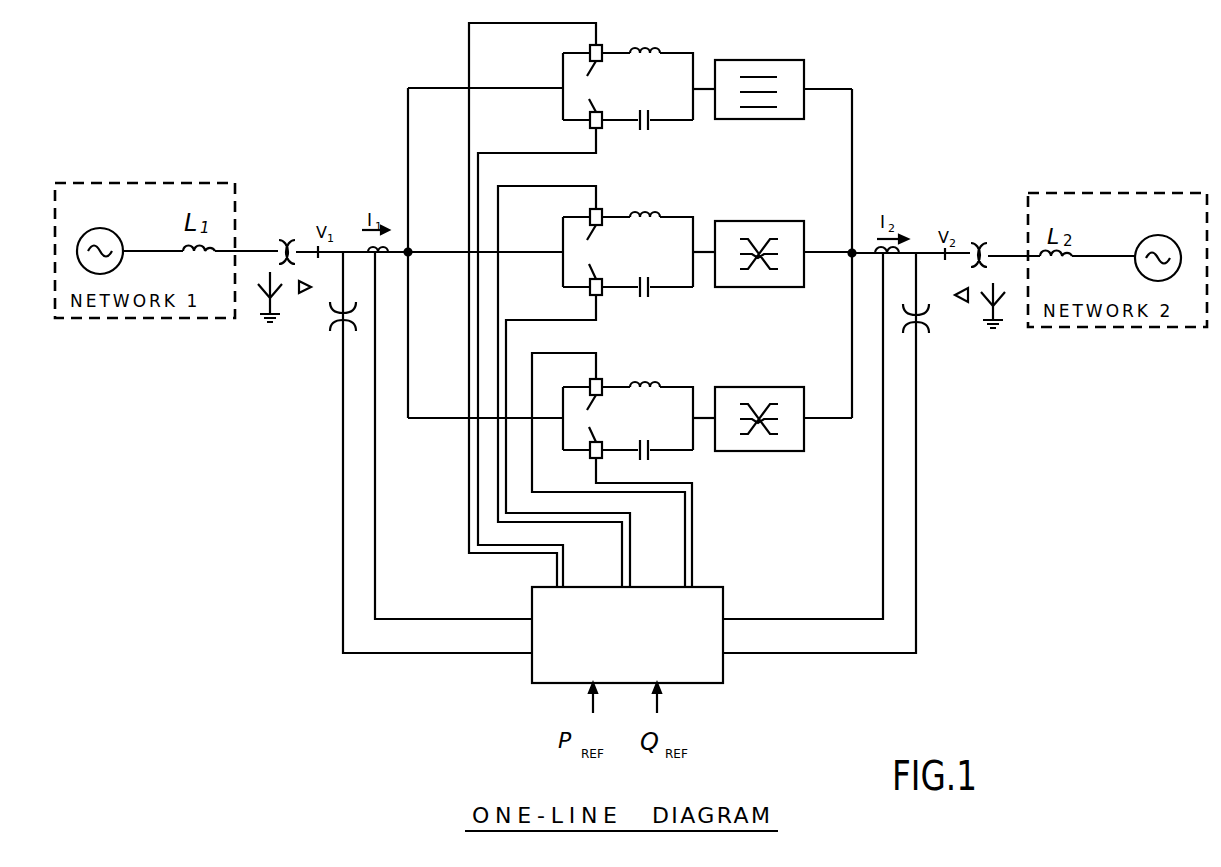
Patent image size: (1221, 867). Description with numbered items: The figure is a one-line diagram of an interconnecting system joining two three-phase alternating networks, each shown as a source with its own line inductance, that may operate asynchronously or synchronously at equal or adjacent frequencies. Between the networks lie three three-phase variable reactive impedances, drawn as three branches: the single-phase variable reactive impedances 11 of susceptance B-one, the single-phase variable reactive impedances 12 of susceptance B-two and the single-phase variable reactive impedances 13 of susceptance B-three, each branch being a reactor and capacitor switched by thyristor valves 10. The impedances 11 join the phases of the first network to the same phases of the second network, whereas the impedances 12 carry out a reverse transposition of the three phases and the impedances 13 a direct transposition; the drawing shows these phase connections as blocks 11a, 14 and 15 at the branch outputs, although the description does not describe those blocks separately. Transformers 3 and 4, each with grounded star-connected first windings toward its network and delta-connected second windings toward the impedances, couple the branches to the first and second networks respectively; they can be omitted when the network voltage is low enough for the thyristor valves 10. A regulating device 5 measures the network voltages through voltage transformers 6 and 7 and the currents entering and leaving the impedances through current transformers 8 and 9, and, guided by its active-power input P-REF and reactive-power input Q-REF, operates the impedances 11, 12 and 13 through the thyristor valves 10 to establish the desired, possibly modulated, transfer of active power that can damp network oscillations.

The transformer 3 is at (283, 239).
The transformer 4 is at (971, 246).
The regulating device 5 is at (717, 600).
The voltage transformer 6 is at (331, 324).
The voltage transformer 7 is at (930, 324).
The current transformer 8 is at (382, 258).
The current transformer 9 is at (878, 260).
The thyristor valves 10 is at (585, 251).
The single-phase variable reactive impedances 11 is at (700, 56).
The phase connection unit of branch B1 11a is at (762, 113).
The single-phase variable reactive impedances 12 is at (675, 208).
The single-phase variable reactive impedances 13 is at (677, 382).
The phase-changing connection unit of branch B2 14 is at (755, 287).
The phase-changing connection unit of branch B3 15 is at (755, 451).